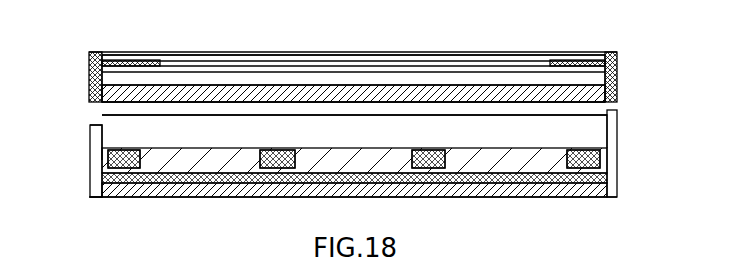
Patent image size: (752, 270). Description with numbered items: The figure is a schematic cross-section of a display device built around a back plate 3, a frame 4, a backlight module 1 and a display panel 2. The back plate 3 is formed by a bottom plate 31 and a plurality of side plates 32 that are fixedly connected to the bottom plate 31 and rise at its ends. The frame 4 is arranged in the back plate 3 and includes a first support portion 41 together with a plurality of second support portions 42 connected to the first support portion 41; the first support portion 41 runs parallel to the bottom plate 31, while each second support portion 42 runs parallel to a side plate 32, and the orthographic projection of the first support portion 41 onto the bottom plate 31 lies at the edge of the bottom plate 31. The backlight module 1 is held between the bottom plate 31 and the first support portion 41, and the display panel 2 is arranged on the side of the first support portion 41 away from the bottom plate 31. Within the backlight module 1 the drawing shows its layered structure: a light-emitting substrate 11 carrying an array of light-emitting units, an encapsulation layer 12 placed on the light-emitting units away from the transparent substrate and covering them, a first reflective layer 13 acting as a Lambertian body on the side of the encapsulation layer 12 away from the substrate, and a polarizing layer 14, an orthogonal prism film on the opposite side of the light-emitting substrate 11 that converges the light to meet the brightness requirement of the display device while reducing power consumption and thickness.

The backlight module 1 is at (660, 70).
The display panel 2 is at (216, 56).
The back plate 3 is at (41, 134).
The frame 4 is at (47, 52).
The light-emitting substrate 11 is at (600, 127).
The encapsulation layer 12 is at (617, 158).
The first reflective layer 13 is at (617, 75).
The polarizing layer 14 is at (617, 94).
The bottom plate 31 is at (90, 188).
The side plates 32 is at (90, 147).
The first support portion 41 is at (90, 85).
The second support portions 42 is at (90, 67).